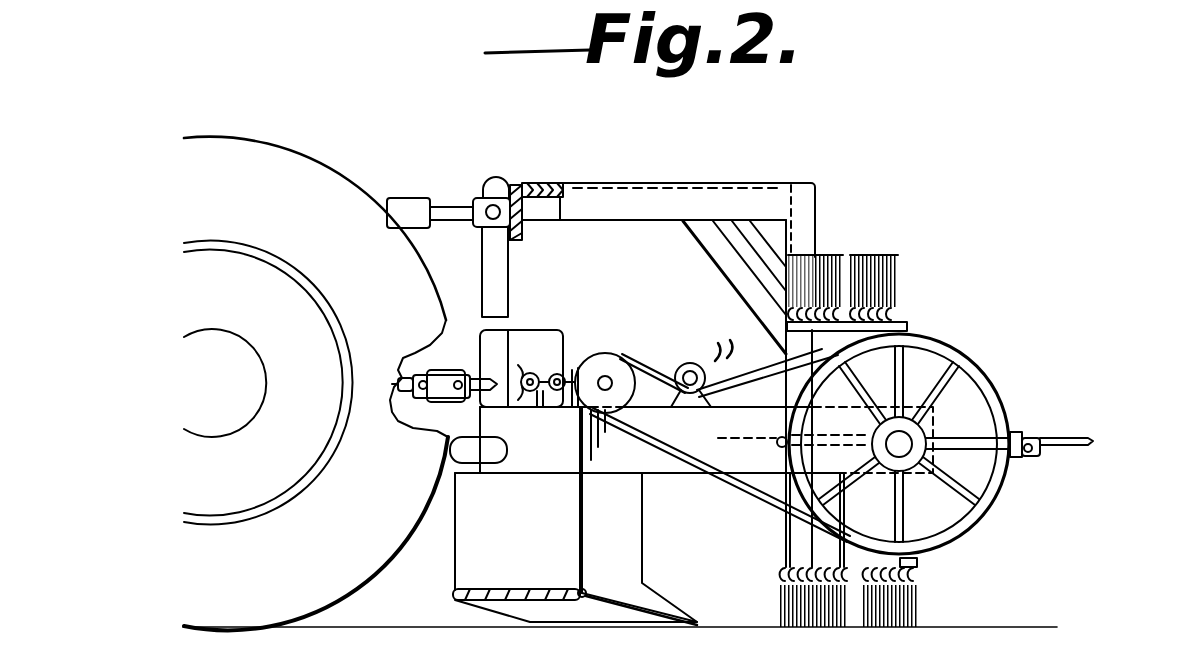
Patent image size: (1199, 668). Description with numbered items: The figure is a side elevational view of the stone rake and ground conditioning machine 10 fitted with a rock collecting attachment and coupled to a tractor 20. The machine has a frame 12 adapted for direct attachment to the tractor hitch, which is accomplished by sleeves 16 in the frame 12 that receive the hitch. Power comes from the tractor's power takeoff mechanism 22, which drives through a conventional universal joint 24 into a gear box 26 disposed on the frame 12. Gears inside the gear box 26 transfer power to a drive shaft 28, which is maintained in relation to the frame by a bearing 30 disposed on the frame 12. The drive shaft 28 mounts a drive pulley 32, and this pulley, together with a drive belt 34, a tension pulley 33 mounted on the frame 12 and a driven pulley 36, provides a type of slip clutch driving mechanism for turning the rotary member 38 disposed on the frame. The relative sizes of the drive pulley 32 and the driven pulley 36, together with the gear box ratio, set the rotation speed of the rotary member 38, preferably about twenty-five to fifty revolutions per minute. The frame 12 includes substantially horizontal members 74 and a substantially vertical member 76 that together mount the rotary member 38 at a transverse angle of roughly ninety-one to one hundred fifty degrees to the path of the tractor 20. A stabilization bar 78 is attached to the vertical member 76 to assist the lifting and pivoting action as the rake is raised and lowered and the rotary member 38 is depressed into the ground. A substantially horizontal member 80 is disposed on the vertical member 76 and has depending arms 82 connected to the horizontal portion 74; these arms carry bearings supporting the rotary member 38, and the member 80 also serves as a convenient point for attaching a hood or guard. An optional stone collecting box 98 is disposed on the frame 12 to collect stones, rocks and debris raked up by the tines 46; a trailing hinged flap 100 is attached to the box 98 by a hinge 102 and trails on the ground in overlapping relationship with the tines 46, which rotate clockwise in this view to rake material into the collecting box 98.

The stone rake and ground conditioning machine 10 is at (828, 171).
The frame 12 is at (490, 458).
The sleeves 16 is at (441, 476).
The tractor 20 is at (352, 140).
The power takeoff mechanism 22 is at (403, 364).
The universal joint 24 is at (456, 368).
The gear box 26 is at (532, 330).
The drive shaft 28 is at (626, 356).
The bearing 30 is at (563, 366).
The drive pulley 32 is at (663, 368).
The tension pulley 33 is at (688, 366).
The drive belt 34 is at (745, 438).
The driven pulley 36 is at (990, 368).
The rotary member 38 is at (899, 444).
The tines 46 is at (898, 278).
The horizontal members 74 is at (682, 463).
The vertical member 76 is at (504, 187).
The stabilization bar 78 is at (427, 200).
The horizontal member 80 is at (670, 182).
The depending arms 82 is at (727, 275).
The stone collecting box 98 is at (473, 573).
The trailing hinged flap 100 is at (657, 613).
The hinge 102 is at (585, 590).